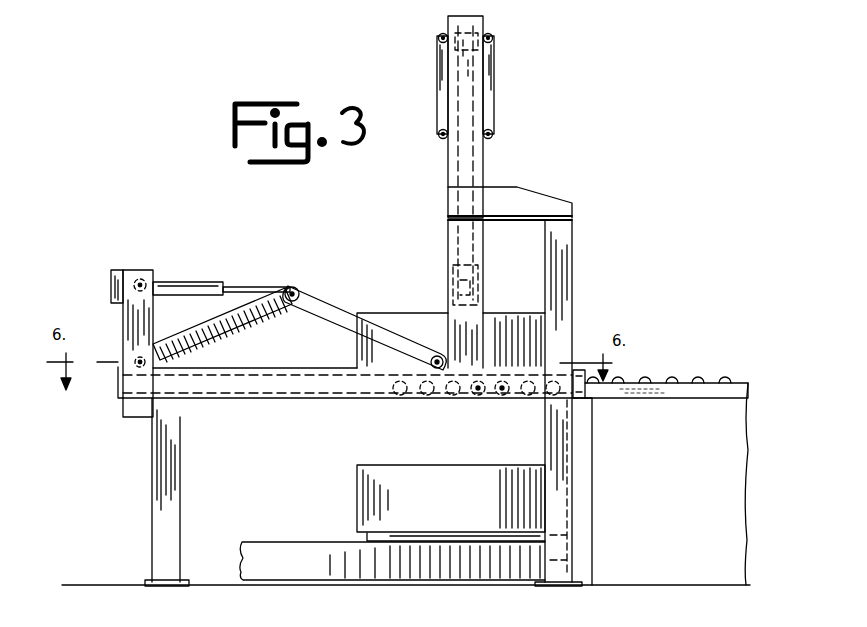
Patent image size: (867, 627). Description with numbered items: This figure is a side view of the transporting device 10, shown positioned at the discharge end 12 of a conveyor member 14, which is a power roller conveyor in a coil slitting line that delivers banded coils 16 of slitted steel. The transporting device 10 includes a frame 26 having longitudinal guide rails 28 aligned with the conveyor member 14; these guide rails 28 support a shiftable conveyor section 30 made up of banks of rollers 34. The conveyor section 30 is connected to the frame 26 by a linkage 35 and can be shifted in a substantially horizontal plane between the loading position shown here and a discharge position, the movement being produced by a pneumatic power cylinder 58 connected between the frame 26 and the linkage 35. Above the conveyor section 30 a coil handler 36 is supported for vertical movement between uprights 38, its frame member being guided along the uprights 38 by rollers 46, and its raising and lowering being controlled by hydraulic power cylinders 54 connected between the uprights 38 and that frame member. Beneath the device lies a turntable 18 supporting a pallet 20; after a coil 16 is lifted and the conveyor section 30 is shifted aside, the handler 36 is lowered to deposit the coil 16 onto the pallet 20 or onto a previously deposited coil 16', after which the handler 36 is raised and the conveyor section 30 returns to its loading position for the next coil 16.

The transporting device 10 is at (574, 113).
The discharge end 12 is at (595, 398).
The conveyor member 14 is at (722, 382).
The banded coil 16 is at (451, 324).
The previously deposited coil 16' is at (451, 480).
The turntable 18 is at (262, 546).
The pallet 20 is at (366, 538).
The frame 26 is at (148, 466).
The guide rail 28 is at (279, 400).
The conveyor section 30 is at (385, 400).
The roller 34 is at (501, 394).
The linkage 35 is at (310, 300).
The coil handler 36 is at (452, 250).
The upright 38 is at (447, 160).
The roller 46 is at (438, 38).
The power cylinder 54 is at (472, 243).
The power cylinder 58 is at (189, 282).